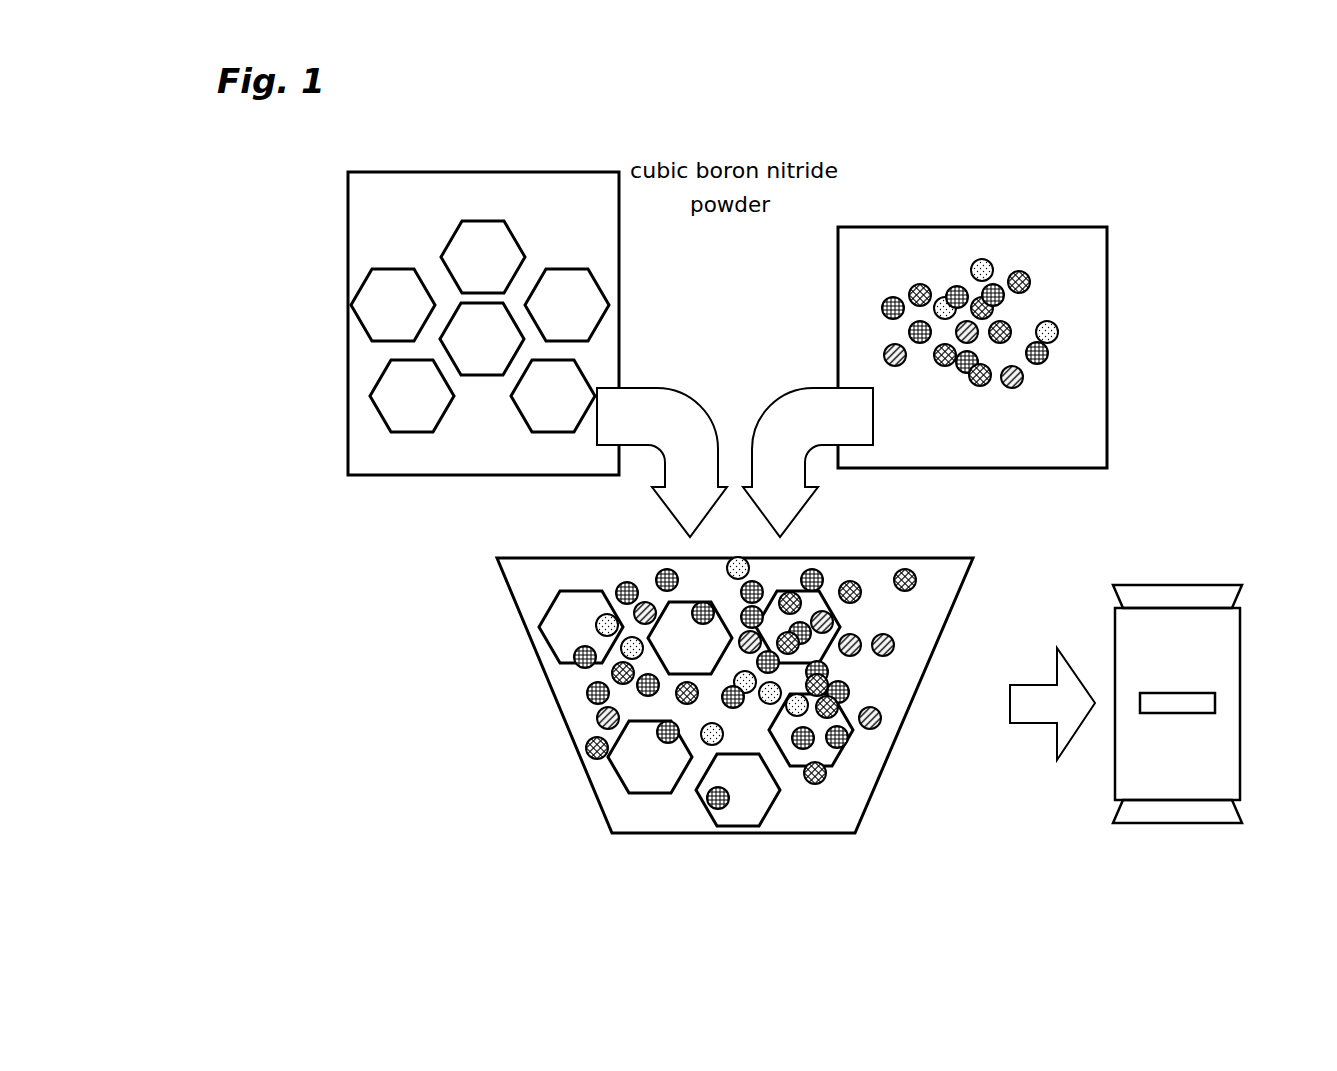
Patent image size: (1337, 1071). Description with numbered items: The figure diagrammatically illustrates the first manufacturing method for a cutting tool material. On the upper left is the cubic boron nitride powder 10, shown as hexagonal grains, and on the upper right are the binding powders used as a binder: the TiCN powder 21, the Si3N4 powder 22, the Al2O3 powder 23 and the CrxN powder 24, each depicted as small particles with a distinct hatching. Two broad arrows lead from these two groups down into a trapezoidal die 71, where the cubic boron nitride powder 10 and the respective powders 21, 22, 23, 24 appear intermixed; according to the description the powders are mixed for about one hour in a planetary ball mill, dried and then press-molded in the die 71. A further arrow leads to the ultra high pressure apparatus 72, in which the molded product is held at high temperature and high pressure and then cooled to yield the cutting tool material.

The cubic boron nitride powder 10 is at (498, 245).
The TiCN powder 21 is at (997, 297).
The Si3N4 powder 22 is at (1030, 283).
The Al2O3 powder 23 is at (990, 260).
The CrxN powder 24 is at (1027, 377).
The die 71 is at (555, 700).
The ultra high pressure apparatus 72 is at (1195, 650).